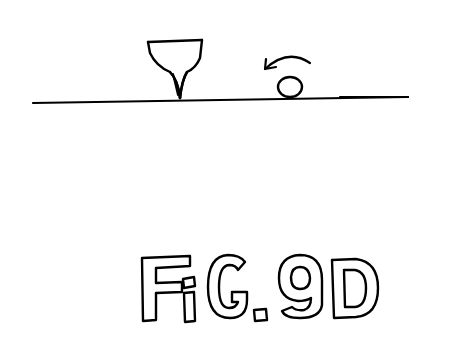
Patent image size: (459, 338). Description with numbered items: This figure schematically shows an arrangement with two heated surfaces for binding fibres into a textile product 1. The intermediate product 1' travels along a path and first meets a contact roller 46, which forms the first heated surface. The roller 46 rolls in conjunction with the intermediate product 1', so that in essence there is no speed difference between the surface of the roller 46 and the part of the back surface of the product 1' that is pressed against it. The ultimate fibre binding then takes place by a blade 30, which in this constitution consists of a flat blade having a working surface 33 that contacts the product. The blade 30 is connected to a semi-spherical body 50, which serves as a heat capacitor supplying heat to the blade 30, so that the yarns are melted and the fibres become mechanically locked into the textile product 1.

The textile product 1 is at (220, 68).
The intermediate product 1' is at (374, 70).
The semi-spherical body 50 is at (202, 45).
The blade 30 is at (178, 97).
The working surface 33 is at (182, 100).
The contact roller 46 is at (283, 98).